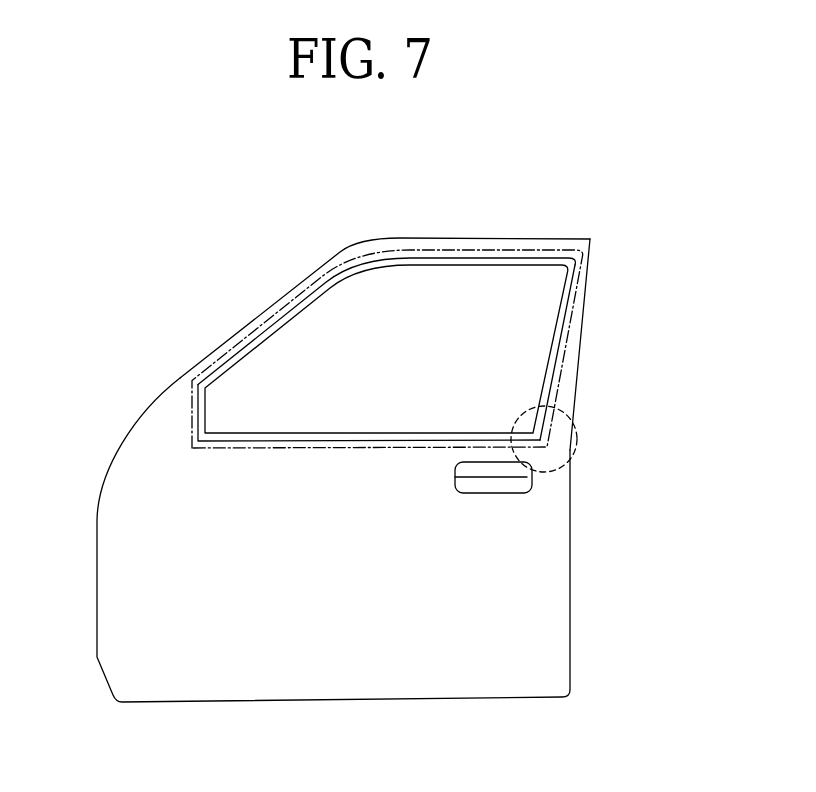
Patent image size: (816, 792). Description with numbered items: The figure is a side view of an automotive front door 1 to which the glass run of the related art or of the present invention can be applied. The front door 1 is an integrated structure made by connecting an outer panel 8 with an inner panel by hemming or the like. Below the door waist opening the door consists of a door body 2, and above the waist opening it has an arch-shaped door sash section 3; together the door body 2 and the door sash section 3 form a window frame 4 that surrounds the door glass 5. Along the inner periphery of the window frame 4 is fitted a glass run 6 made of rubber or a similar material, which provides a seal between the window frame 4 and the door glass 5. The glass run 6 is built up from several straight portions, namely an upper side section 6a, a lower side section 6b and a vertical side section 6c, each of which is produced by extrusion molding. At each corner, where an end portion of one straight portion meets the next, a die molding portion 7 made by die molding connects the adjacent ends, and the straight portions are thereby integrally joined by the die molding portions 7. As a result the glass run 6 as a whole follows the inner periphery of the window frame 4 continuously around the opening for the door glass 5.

The automotive front door 1 is at (358, 426).
The door body 2 is at (543, 613).
The door sash section 3 is at (475, 243).
The window frame 4 is at (582, 320).
The door glass 5 is at (343, 330).
The glass run 6 is at (387, 312).
The upper side section 6a is at (525, 265).
The lower side section 6b is at (384, 440).
The vertical side section 6c is at (548, 368).
The die molding portion 7 is at (197, 445).
The outer panel 8 is at (532, 577).